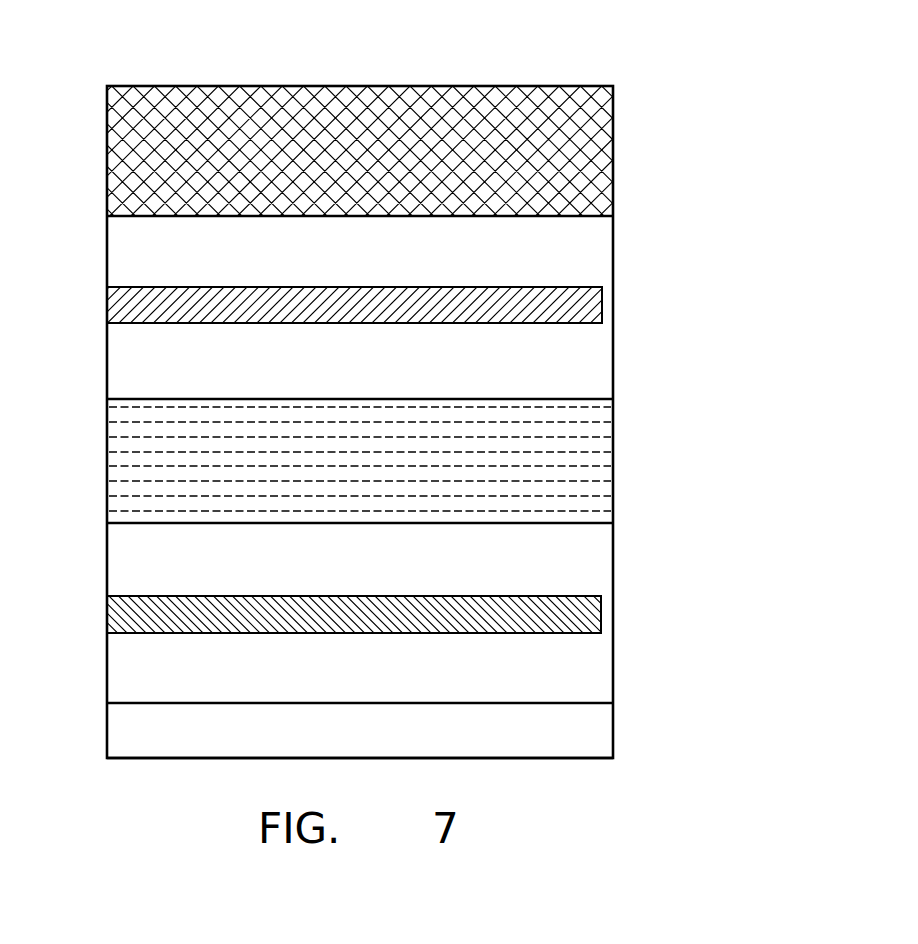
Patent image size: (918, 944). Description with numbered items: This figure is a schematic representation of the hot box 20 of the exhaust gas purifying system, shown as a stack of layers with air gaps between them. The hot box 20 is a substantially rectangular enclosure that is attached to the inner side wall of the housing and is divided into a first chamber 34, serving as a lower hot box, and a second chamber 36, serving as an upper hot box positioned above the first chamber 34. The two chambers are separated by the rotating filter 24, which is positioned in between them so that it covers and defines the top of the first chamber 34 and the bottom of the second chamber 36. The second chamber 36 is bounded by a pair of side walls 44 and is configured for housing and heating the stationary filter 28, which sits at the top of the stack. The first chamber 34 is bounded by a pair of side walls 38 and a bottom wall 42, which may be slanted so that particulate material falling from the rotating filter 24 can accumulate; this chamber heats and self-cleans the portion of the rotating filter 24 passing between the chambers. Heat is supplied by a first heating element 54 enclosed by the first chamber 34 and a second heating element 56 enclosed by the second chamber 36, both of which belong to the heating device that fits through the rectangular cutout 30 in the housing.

The hot box 20 is at (600, 60).
The stationary filter 28 is at (143, 158).
The second chamber 36 is at (697, 219).
The side walls 44 is at (613, 257).
The second heating element 56 is at (143, 323).
The rotating filter 24 is at (148, 452).
The first chamber 34 is at (688, 647).
The first heating element 54 is at (143, 633).
The side walls 38 is at (613, 680).
The rectangular cutout 30 is at (133, 703).
The bottom wall 42 is at (201, 760).